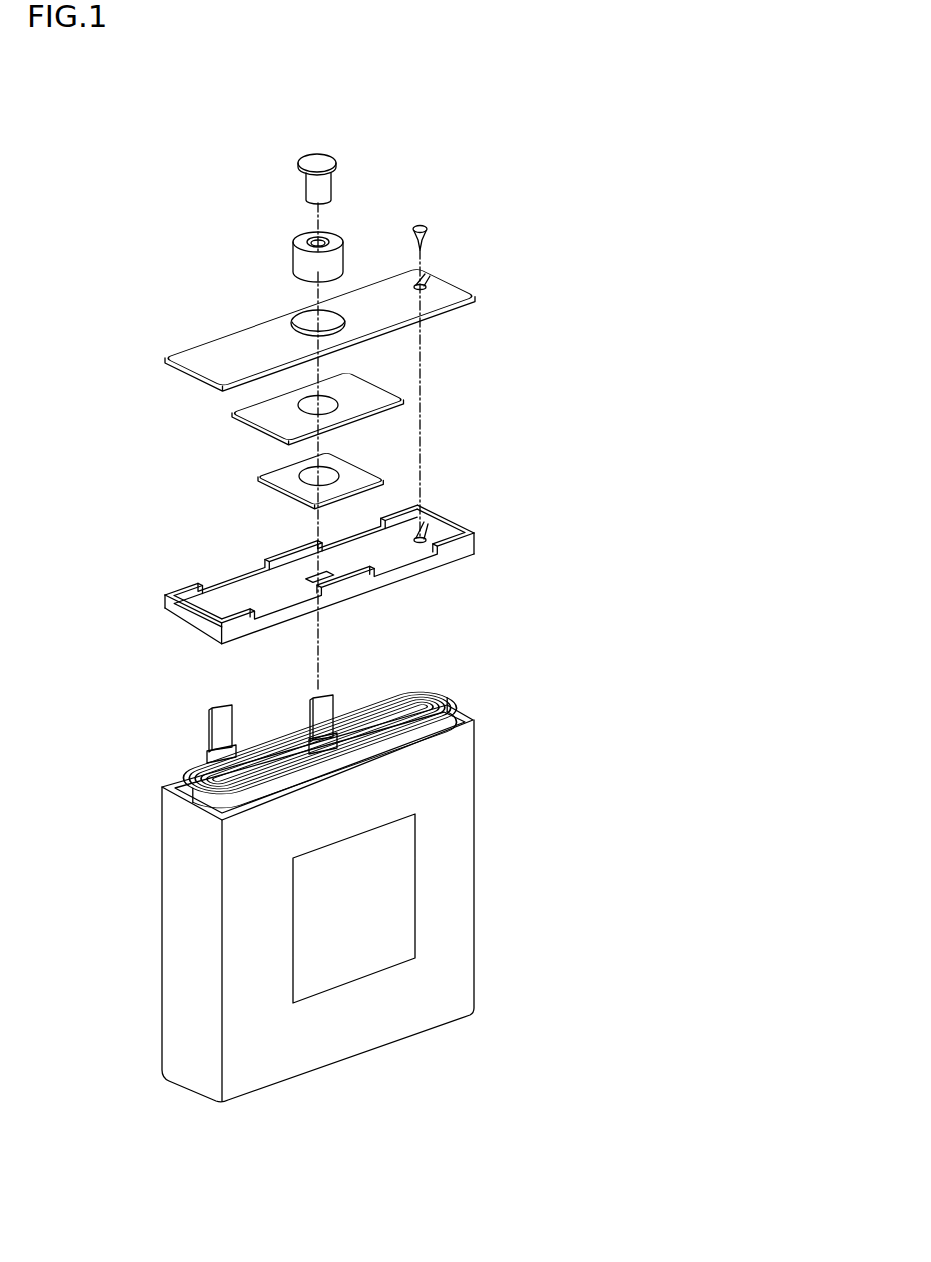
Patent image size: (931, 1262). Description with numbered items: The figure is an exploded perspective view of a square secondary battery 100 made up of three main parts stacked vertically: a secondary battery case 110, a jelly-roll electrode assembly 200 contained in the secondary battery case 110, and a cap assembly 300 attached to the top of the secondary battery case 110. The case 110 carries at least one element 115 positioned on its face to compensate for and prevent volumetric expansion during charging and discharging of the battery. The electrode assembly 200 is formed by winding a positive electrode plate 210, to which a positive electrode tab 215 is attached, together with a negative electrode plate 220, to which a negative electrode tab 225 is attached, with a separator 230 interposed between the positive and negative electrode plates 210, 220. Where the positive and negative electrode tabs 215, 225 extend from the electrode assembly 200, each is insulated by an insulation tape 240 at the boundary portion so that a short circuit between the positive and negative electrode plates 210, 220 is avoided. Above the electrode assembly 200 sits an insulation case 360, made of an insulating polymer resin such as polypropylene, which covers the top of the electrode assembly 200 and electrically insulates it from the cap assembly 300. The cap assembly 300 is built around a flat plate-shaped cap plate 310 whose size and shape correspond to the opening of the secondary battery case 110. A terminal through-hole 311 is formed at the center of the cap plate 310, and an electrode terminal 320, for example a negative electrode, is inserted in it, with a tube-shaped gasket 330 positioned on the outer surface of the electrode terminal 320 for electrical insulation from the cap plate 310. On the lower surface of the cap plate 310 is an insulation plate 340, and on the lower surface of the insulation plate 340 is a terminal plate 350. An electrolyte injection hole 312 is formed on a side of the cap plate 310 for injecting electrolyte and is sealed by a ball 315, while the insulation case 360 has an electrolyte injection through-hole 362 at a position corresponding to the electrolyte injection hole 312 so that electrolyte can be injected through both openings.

The secondary battery 100 is at (436, 121).
The secondary battery case 110 is at (456, 773).
The element for compensating for and preventing volumetric expansion 115 is at (367, 902).
The jelly-roll electrode assembly 200 is at (181, 692).
The positive electrode plate 210 is at (437, 695).
The positive electrode tab 215 is at (214, 738).
The negative electrode plate 220 is at (410, 705).
The negative electrode tab 225 is at (307, 713).
The separator 230 is at (420, 697).
The insulation tape 240 is at (218, 762).
The cap assembly 300 is at (500, 280).
The cap plate 310 is at (188, 353).
The terminal through-hole 311 is at (296, 308).
The electrolyte injection hole 312 is at (429, 277).
The ball 315 is at (421, 224).
The electrode terminal 320 is at (313, 158).
The gasket 330 is at (294, 237).
The insulation plate 340 is at (258, 418).
The terminal plate 350 is at (265, 475).
The insulation case 360 is at (182, 590).
The electrolyte injection through-hole 362 is at (434, 530).